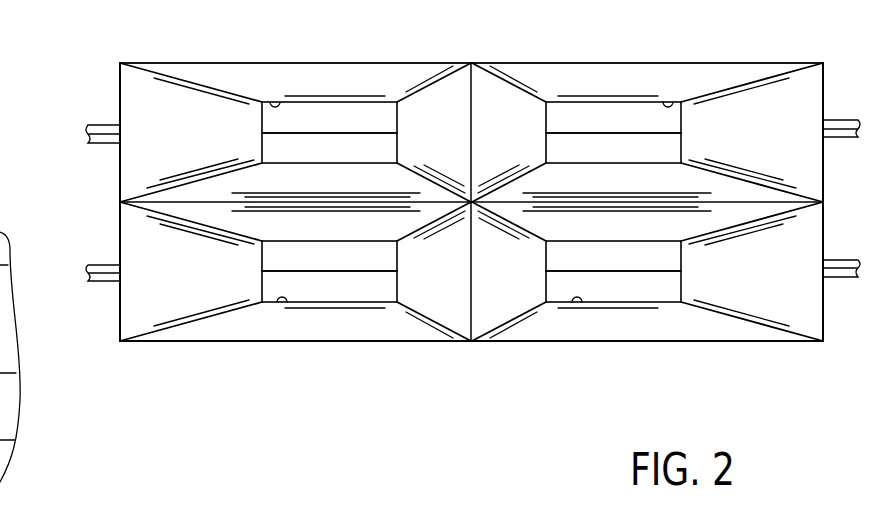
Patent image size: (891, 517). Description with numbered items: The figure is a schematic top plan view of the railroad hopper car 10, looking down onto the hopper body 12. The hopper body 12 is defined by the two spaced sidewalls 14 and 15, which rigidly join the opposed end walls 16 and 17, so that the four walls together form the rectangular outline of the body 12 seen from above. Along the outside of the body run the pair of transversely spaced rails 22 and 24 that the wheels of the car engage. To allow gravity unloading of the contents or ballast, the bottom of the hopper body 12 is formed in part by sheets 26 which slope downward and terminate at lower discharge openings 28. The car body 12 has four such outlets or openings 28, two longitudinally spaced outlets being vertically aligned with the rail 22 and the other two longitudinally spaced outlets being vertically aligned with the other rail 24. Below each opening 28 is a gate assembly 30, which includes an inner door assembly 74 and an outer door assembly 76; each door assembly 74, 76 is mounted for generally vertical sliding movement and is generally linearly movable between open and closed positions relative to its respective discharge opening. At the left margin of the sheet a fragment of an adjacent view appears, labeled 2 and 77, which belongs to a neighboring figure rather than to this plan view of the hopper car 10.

The railroad hopper car 10 is at (792, 381).
The hopper body 12 is at (843, 317).
The sidewall 14 is at (518, 342).
The sidewall 15 is at (471, 63).
The end wall 16 is at (117, 322).
The end wall 17 is at (823, 94).
The rail 22 is at (840, 258).
The rail 24 is at (838, 140).
The sheets 26 is at (315, 89).
The discharge opening 28 is at (274, 98).
The gate assembly 30 is at (398, 92).
The inner door assembly 74 is at (315, 158).
The outer door assembly 76 is at (315, 128).
The adjacent figure numeral 2 is at (10, 326).
The adjacent figure element 77 is at (18, 492).